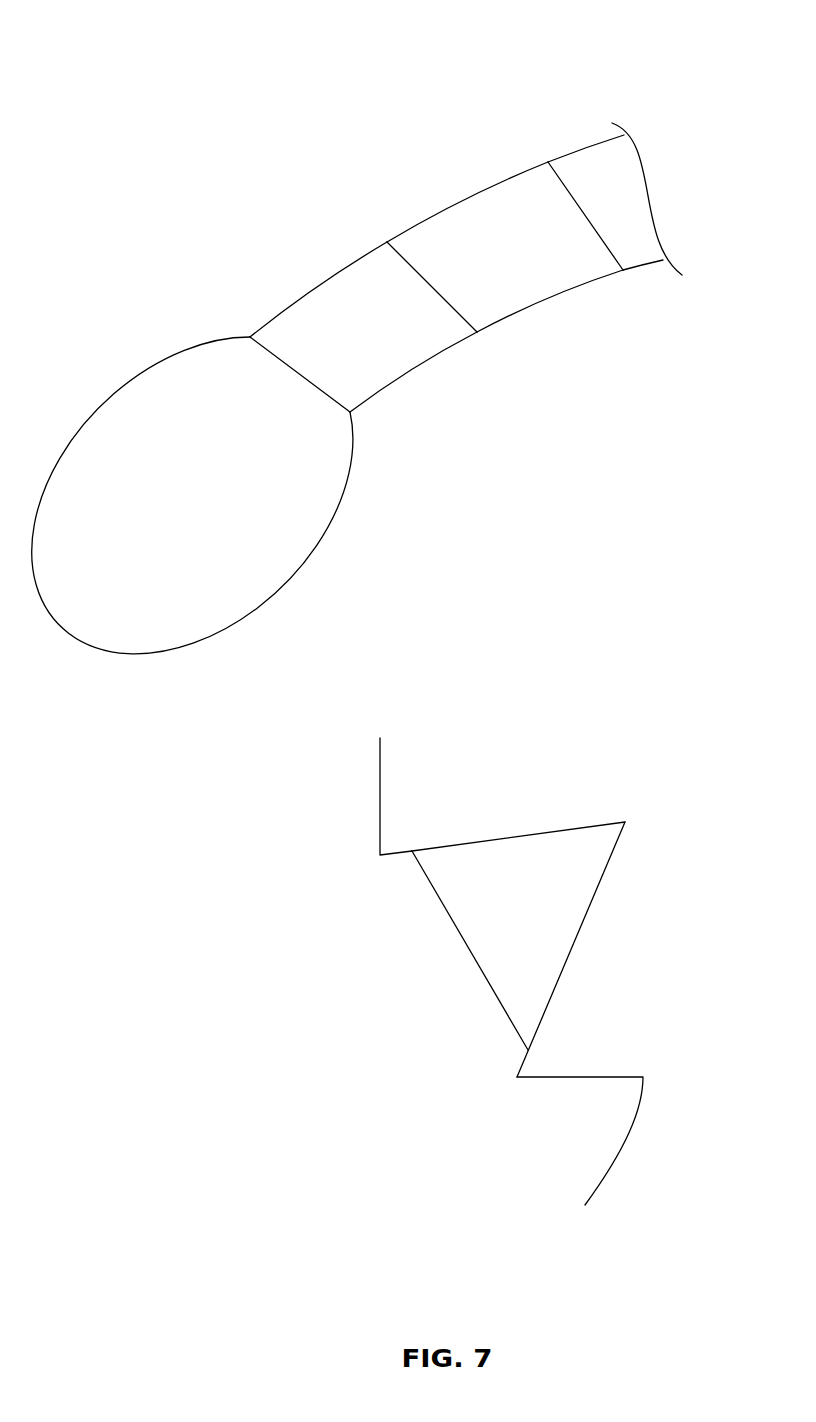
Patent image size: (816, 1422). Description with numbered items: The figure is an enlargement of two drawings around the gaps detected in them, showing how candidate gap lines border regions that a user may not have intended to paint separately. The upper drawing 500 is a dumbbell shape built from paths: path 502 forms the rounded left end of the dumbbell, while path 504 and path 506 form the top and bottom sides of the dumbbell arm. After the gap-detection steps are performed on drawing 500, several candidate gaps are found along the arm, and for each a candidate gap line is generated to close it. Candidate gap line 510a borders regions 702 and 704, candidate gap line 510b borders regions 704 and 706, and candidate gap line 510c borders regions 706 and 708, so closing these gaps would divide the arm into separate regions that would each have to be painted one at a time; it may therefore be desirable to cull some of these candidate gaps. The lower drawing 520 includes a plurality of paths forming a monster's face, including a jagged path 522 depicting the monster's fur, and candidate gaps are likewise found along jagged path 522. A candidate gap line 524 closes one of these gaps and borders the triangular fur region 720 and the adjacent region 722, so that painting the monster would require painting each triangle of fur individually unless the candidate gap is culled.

The drawing 500 is at (157, 162).
The path 502 is at (127, 385).
The path 504 is at (588, 148).
The path 506 is at (642, 268).
The candidate gap line 510a is at (297, 370).
The candidate gap line 510b is at (428, 282).
The candidate gap line 510c is at (600, 233).
The region 702 is at (151, 492).
The region 704 is at (339, 347).
The region 706 is at (491, 261).
The region 708 is at (584, 197).
The drawing 520 is at (293, 773).
The jagged path 522 is at (597, 895).
The joint 524 is at (443, 902).
The triangular segment 720 is at (488, 927).
The body segment 722 is at (328, 997).